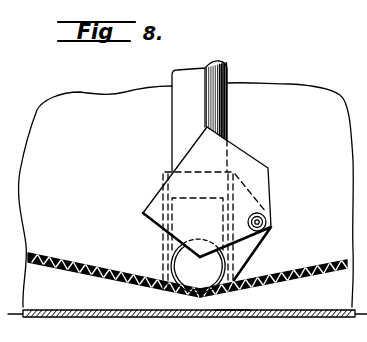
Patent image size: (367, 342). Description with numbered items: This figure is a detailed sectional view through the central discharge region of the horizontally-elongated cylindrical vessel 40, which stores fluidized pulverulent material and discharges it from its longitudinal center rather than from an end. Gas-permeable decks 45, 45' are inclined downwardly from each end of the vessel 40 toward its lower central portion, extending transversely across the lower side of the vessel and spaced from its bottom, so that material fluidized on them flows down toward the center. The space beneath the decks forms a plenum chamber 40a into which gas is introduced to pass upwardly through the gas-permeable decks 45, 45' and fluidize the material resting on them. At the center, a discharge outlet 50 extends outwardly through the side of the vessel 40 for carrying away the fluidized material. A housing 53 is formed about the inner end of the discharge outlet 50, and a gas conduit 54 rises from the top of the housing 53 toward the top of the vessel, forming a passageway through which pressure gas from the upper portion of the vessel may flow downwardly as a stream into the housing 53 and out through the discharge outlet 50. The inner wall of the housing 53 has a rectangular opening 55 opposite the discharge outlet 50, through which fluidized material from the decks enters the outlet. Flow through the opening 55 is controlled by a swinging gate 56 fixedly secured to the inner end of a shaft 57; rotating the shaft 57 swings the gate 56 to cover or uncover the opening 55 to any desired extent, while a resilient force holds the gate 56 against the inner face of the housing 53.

The vessel 40 is at (313, 313).
The plenum chamber 40a is at (232, 300).
The gas-permeable deck 45 is at (114, 251).
The gas-permeable deck 45' is at (273, 252).
The discharge outlet 50 is at (184, 280).
The housing 53 is at (163, 172).
The gas conduit 54 is at (228, 81).
The rectangular opening 55 is at (142, 214).
The swinging gate 56 is at (263, 165).
The shaft 57 is at (265, 218).